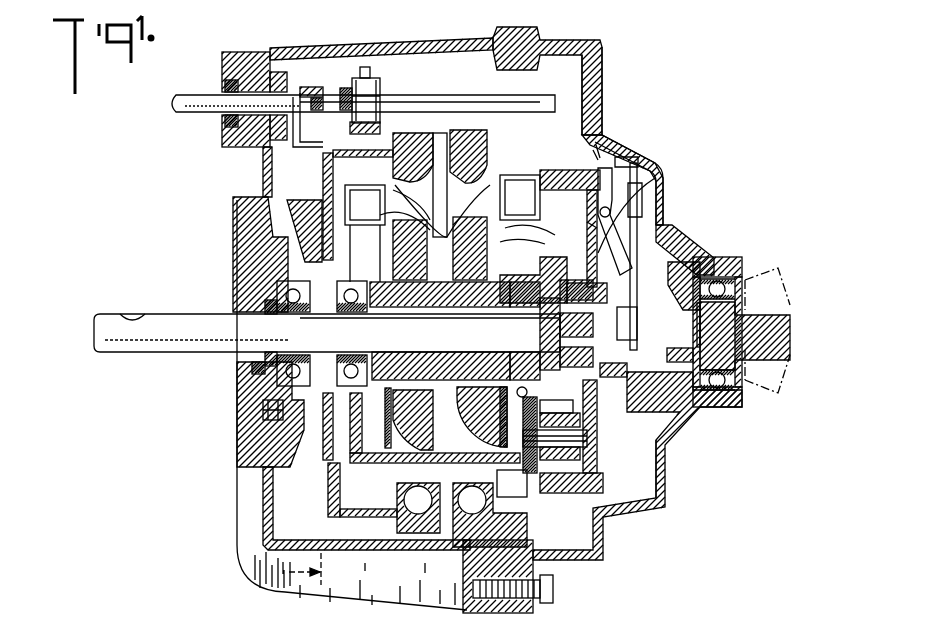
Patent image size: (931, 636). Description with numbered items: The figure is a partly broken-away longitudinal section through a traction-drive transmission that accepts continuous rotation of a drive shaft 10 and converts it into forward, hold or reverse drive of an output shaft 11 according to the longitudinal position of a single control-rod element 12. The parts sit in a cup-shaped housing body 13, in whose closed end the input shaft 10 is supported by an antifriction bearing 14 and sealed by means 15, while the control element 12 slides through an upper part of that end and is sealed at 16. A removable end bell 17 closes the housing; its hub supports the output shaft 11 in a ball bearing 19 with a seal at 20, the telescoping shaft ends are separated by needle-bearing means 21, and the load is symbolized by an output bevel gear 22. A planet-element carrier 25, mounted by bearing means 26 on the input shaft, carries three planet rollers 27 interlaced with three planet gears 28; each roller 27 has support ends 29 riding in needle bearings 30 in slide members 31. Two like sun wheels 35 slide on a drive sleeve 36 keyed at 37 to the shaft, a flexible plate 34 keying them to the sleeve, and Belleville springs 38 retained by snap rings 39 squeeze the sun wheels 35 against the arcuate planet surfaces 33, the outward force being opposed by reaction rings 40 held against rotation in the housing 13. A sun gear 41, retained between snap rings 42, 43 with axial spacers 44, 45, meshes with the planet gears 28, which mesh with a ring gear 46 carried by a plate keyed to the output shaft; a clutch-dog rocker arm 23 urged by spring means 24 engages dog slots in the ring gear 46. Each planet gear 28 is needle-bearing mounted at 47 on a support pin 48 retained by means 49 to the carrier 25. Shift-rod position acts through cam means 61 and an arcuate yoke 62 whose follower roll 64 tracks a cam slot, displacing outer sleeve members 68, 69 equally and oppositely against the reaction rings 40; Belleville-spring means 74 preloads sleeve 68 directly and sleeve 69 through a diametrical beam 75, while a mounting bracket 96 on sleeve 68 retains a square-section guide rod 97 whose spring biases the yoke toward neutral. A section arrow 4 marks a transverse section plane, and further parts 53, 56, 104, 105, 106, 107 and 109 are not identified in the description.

The section line 4 is at (316, 572).
The drive shaft 10 is at (160, 315).
The output shaft 11 is at (768, 355).
The control-rod element 12 is at (185, 96).
The housing body 13 is at (372, 52).
The antifriction bearing 14 is at (262, 402).
The sealing means 15 is at (265, 370).
The seal 16 is at (222, 121).
The end bell 17 is at (603, 74).
The ball bearing 19 is at (721, 262).
The seal 20 is at (698, 262).
The needle-bearing means 21 is at (525, 334).
The output bevel gear 22 is at (768, 282).
The clutch-dog rocker arm 23 is at (648, 160).
The spring means 24 is at (666, 222).
The planet-element carrier 25 is at (360, 465).
The bearing means 26 is at (355, 355).
The planet roller 27 is at (442, 185).
The planet gear 28 is at (590, 412).
The rotary-support end 29 is at (390, 206).
The needle bearing 30 is at (548, 154).
The slide member 31 is at (385, 186).
The planet surface 33 is at (413, 157).
The plate 34 is at (445, 251).
The sun wheel 35 is at (459, 248).
The drive sleeve 36 is at (405, 300).
The key 37 is at (509, 331).
The Belleville spring 38 is at (374, 418).
The snap ring 39 is at (462, 340).
The reaction ring 40 is at (462, 515).
The sun gear 41 is at (592, 258).
The snap ring 42 is at (560, 324).
The snap ring 43 is at (275, 312).
The axial spacer 44 is at (300, 313).
The axial spacer 45 is at (457, 311).
The ring gear 46 is at (596, 140).
The needle bearing 47 is at (552, 492).
The support pin 48 is at (598, 436).
The retaining means 49 is at (513, 484).
The bolt 53 is at (524, 381).
The sleeve 56 is at (598, 390).
The cam means 61 is at (335, 93).
The yoke 62 is at (350, 128).
The cam-follower roll 64 is at (382, 82).
The sleeve member 68 is at (348, 510).
The sleeve member 69 is at (533, 528).
The Belleville-spring means 74 is at (322, 184).
The beam 75 is at (286, 205).
The mounting bracket 96 is at (312, 148).
The guide rod 97 is at (315, 98).
The arm 104 is at (617, 147).
The spring 105 is at (665, 195).
The rod 106 is at (645, 270).
The block 107 is at (690, 343).
The hub 109 is at (696, 325).